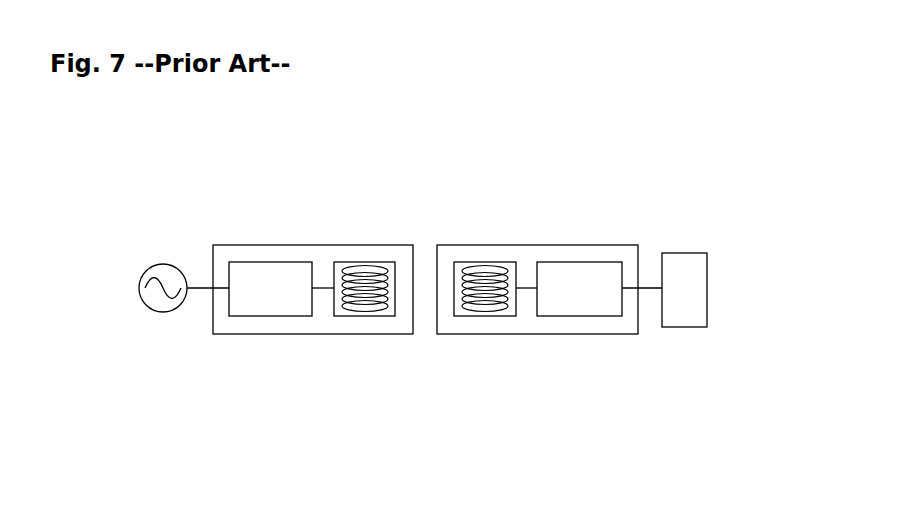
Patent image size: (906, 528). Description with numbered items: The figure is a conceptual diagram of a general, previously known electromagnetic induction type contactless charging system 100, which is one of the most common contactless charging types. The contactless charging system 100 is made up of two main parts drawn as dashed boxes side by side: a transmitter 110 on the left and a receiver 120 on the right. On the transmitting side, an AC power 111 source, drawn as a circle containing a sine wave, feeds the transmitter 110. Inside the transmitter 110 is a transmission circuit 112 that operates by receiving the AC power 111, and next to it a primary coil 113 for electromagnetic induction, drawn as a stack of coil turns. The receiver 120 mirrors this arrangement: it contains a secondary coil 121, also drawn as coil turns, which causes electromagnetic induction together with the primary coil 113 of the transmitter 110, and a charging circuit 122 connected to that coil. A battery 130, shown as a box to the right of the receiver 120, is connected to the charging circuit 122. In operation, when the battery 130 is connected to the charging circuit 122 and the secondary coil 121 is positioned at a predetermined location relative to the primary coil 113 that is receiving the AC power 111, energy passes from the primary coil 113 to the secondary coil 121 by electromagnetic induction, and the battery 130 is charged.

The contactless charging system 100 is at (650, 179).
The transmitter 110 is at (299, 346).
The AC power 111 is at (145, 306).
The transmission circuit 112 is at (272, 263).
The primary coil 113 is at (368, 263).
The receiver 120 is at (537, 345).
The secondary coil 121 is at (490, 263).
The charging circuit 122 is at (585, 263).
The battery 130 is at (683, 327).